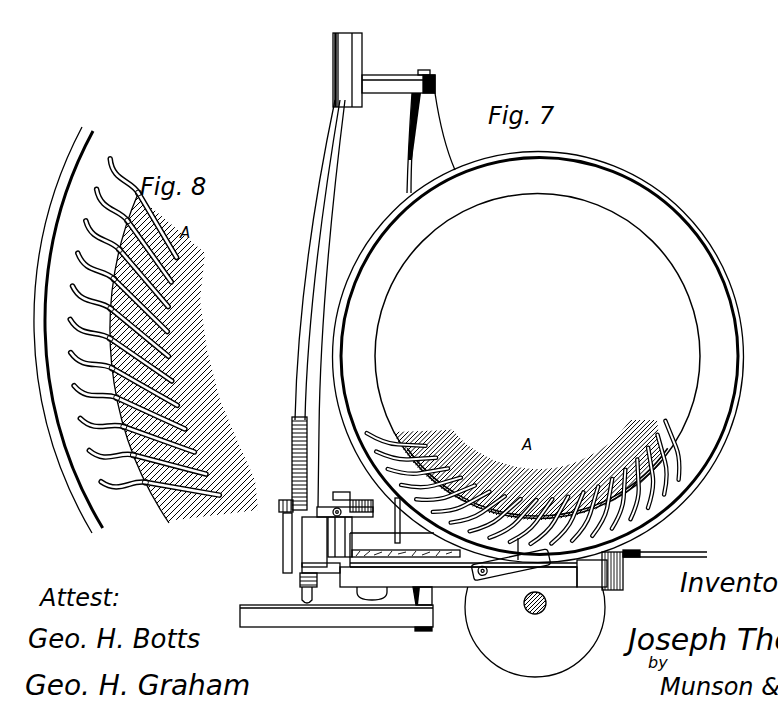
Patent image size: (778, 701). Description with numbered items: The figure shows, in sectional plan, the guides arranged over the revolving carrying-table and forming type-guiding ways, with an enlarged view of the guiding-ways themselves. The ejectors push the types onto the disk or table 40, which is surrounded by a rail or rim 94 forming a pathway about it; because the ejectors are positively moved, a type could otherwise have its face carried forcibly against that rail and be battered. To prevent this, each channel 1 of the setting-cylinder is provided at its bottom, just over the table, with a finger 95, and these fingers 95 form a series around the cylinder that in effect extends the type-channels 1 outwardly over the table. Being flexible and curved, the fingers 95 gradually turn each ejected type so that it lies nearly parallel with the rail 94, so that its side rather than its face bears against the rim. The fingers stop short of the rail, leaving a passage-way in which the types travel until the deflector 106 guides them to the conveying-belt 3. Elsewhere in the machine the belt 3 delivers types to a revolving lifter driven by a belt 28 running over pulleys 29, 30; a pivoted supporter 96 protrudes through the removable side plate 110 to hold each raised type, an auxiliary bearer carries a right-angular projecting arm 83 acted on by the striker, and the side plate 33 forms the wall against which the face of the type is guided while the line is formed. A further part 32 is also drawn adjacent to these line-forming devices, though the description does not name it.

In FIG. 7, the disk or table 40 is at (539, 356).
In FIG. 8, the disk or table 40 is at (107, 329).
In FIG. 7, the rail or rim 94 is at (740, 403).
In FIG. 8, the rail or rim 94 is at (62, 474).
In FIG. 7, the finger 95 is at (376, 435).
In FIG. 8, the finger 95 is at (112, 175).
In FIG. 7, the channels 1 is at (404, 473).
In FIG. 8, the channels 1 is at (112, 258).
In FIG. 7, the belt 28 is at (336, 507).
In FIG. 7, the pulley 29 is at (282, 511).
In FIG. 7, the pulley 30 is at (370, 511).
In FIG. 7, the plate 32 is at (329, 567).
In FIG. 7, the side plate 33 is at (285, 553).
In FIG. 7, the right-angular projecting arm 83 is at (313, 578).
In FIG. 7, the supporter 96 is at (304, 598).
In FIG. 7, the deflector 106 is at (511, 567).
In FIG. 7, the removable side plate 110 is at (309, 566).
In FIG. 7, the conveying-belt 3 is at (642, 570).